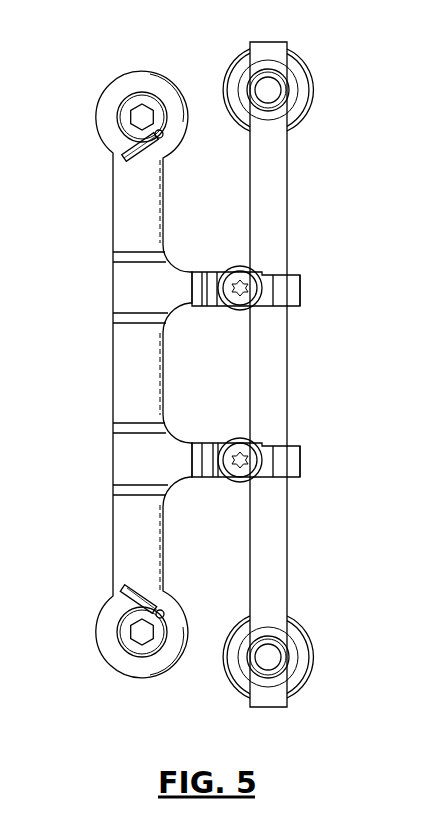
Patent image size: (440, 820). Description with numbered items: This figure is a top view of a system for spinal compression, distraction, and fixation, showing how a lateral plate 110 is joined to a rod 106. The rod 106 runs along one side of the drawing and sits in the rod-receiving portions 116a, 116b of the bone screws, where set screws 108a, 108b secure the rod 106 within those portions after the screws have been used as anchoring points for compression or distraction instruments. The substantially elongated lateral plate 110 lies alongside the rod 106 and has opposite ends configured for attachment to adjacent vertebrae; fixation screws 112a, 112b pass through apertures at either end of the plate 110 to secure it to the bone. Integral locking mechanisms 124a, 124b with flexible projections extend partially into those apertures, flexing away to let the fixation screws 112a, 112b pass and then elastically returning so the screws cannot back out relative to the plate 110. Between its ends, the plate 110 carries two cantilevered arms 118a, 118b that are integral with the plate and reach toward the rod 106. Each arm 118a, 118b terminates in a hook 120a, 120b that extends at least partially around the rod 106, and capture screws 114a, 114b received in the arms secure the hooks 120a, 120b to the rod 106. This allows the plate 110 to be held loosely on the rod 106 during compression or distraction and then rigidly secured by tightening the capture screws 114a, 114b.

The rod 106 is at (273, 385).
The set screw 108a is at (258, 88).
The set screw 108b is at (283, 657).
The lateral plate 110 is at (130, 373).
The fixation screw 112a is at (126, 112).
The fixation screw 112b is at (130, 636).
The capture screw 114a is at (257, 274).
The capture screw 114b is at (260, 470).
The rod-receiving portion 116a is at (312, 83).
The rod-receiving portion 116b is at (243, 677).
The cantilevered arm 118a is at (193, 283).
The cantilevered arm 118b is at (193, 455).
The hook 120a is at (287, 289).
The hook 120b is at (285, 463).
The integral locking mechanism 124a is at (138, 160).
The integral locking mechanism 124b is at (157, 610).